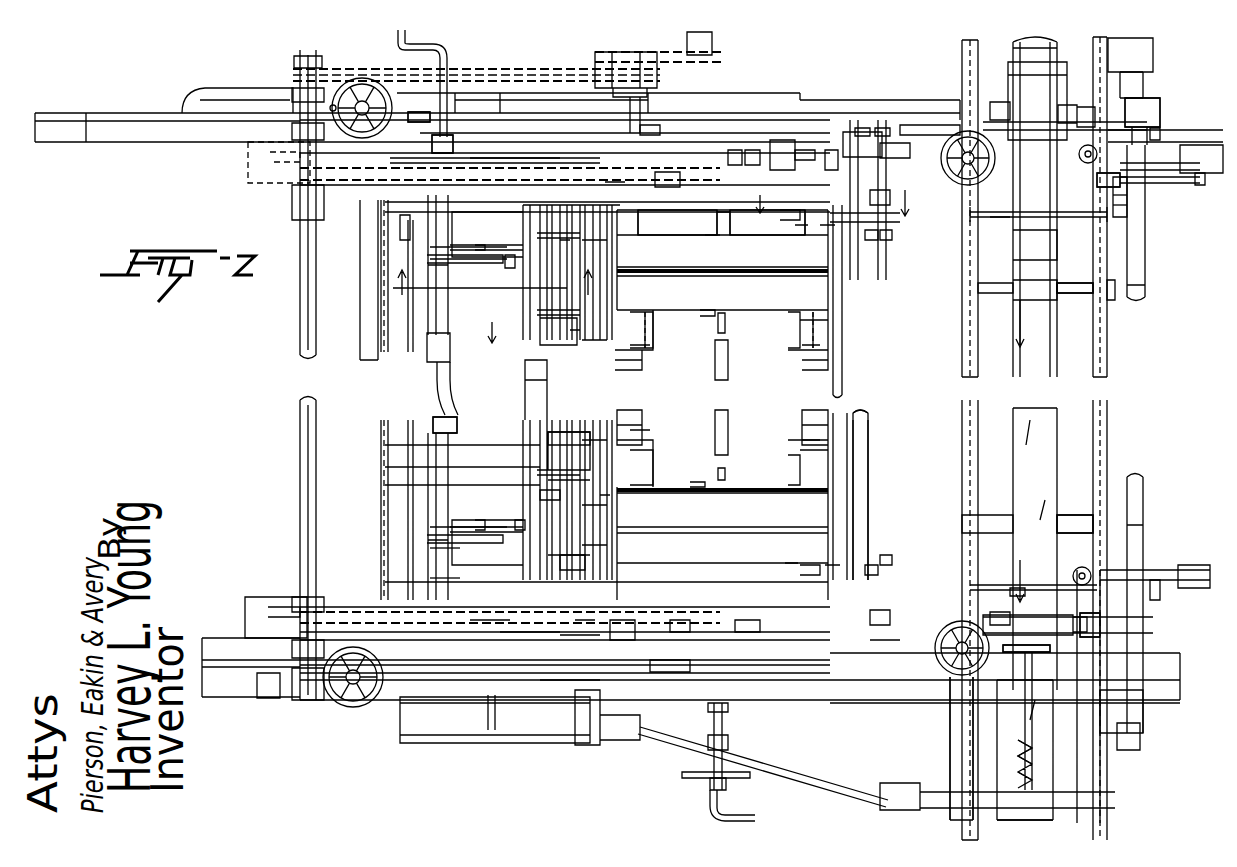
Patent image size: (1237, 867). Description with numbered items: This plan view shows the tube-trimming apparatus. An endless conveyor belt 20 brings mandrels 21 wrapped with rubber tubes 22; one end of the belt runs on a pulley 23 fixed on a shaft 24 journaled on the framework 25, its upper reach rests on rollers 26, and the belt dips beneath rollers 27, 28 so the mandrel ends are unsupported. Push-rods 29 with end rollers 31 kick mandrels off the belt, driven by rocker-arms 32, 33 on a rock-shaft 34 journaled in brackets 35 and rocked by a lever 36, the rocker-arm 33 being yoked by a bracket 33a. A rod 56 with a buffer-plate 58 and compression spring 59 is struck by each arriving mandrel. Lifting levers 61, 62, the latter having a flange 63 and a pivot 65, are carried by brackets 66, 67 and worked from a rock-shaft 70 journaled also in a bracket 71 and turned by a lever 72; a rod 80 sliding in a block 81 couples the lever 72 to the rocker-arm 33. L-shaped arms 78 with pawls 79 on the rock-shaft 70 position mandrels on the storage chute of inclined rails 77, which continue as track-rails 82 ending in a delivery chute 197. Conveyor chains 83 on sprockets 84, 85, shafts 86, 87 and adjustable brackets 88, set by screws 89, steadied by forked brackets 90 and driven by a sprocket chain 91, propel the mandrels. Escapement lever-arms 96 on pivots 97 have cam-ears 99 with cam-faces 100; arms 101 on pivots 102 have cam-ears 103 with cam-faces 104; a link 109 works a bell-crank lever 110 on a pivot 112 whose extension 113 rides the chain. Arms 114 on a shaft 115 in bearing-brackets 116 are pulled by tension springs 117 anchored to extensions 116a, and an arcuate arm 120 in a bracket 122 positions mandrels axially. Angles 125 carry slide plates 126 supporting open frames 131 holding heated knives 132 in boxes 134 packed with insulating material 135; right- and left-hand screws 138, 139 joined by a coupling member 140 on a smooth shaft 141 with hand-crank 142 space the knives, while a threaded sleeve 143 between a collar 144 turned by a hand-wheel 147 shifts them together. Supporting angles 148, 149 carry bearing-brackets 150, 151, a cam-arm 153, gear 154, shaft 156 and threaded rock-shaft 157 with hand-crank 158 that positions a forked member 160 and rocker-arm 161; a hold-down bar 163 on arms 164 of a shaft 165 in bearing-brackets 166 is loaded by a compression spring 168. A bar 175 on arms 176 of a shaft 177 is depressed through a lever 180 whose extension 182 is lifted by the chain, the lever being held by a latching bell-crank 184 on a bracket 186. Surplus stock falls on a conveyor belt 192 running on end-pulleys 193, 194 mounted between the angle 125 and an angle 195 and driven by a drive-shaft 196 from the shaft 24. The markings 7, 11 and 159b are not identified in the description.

The direction arrow 7 is at (831, 203).
The direction arrow 11 is at (500, 295).
The endless conveyor belt 20 is at (1035, 564).
The mandrel 21 is at (1020, 295).
The tube 22 is at (1015, 242).
The pulley 23 is at (1053, 768).
The shaft 24 is at (1115, 805).
The framework 25 is at (950, 745).
The rollers 26 is at (1063, 515).
The roller 27 is at (990, 612).
The roller 28 is at (996, 102).
The push-rods 29 is at (1155, 580).
The rollers 31 is at (1080, 567).
The rocker-arm 32 is at (1212, 588).
The rocker-arm 33 is at (1218, 140).
The bracket 33a is at (1185, 185).
The rock-shaft 34 is at (1143, 525).
The brackets 35 is at (1143, 712).
The lever 36 is at (1140, 742).
The rod 56 is at (1028, 787).
The buffer-plate 58 is at (1028, 660).
The compression spring 59 is at (1020, 756).
The lifting lever 61 is at (1080, 637).
The lifting lever 62 is at (1062, 140).
The marginal flange 63 is at (1095, 105).
The pivot 65 is at (1145, 88).
The bracket 66 is at (1153, 625).
The bracket 67 is at (1160, 108).
The rock-shaft 70 is at (1112, 298).
The bracket 71 is at (1127, 207).
The lever 72 is at (1127, 195).
The inclined rails 77 is at (960, 118).
The L-shaped arms 78 is at (990, 585).
The spring-tensioned pawl 79 is at (1020, 590).
The rod 80 is at (1200, 185).
The apertured block 81 is at (1100, 180).
The track-rails 82 is at (530, 632).
The conveyor chains 83 is at (585, 620).
The sprockets 84 is at (300, 600).
The sprockets 85 is at (888, 615).
The shaft 86 is at (298, 445).
The shaft 87 is at (868, 445).
The vertically adjustable brackets 88 is at (890, 640).
The screws 89 is at (955, 675).
The forked brackets 90 is at (292, 690).
The sprocket chain 91 is at (540, 68).
The lever-arms 96 is at (860, 668).
The pivots 97 is at (640, 668).
The cam-ear 99 is at (820, 670).
The cam-face 100 is at (800, 570).
The arms 101 is at (782, 668).
The pivots 102 is at (680, 620).
The cam-ear 103 is at (760, 668).
The cam-face 104 is at (760, 570).
The link 109 is at (553, 672).
The bell-crank lever 110 is at (405, 104).
The pivot 112 is at (450, 135).
The lateral extension 113 is at (245, 600).
The arms 114 is at (830, 570).
The horizontal shaft 115 is at (860, 412).
The bearing-brackets 116 is at (790, 565).
The extension 116a is at (890, 562).
The tension spring 117 is at (875, 565).
The arcuate arm 120 is at (858, 128).
The bracket 122 is at (882, 128).
The angles 125 is at (800, 420).
The slide plates 126 is at (802, 440).
The open frame 131 is at (795, 450).
The knife 132 is at (770, 487).
The box-like structure 134 is at (660, 477).
The heat-insulating material 135 is at (705, 312).
The right-hand screw 138 is at (715, 455).
The left-hand screw 139 is at (710, 237).
The coupling member 140 is at (724, 380).
The smooth shaft 141 is at (730, 718).
The hand-crank 142 is at (756, 812).
The externally threaded sleeve 143 is at (730, 743).
The collar 144 is at (710, 784).
The hand-wheel 147 is at (685, 773).
The supporting angle 148 is at (435, 378).
The supporting angle 149 is at (525, 375).
The bearing-bracket 150 is at (430, 580).
The bearing-bracket 151 is at (385, 445).
The cam-arm 153 is at (490, 620).
The gear 154 is at (430, 550).
The shaft 156 is at (385, 467).
The rock-shaft 157 is at (385, 485).
The hand-crank 158 is at (490, 728).
The block 159b is at (480, 520).
The forked member 160 is at (430, 527).
The rocker-arm 161 is at (455, 542).
The elongate bar 163 is at (548, 468).
The arms 164 is at (545, 556).
The shaft 165 is at (542, 492).
The bearing-brackets 166 is at (607, 548).
The adjustable compression spring 168 is at (518, 520).
The elongate bar 175 is at (585, 565).
The arms 176 is at (608, 498).
The shaft 177 is at (607, 513).
The lever 180 is at (620, 620).
The lateral extension 182 is at (677, 457).
The bell-crank 184 is at (740, 620).
The bracket 186 is at (722, 668).
The endless conveyor belt 192 is at (545, 725).
The end-pulley 193 is at (400, 226).
The end-pulley 194 is at (588, 745).
The angle 195 is at (365, 362).
The drive-shaft 196 is at (850, 788).
The inclined delivery chute 197 is at (215, 640).